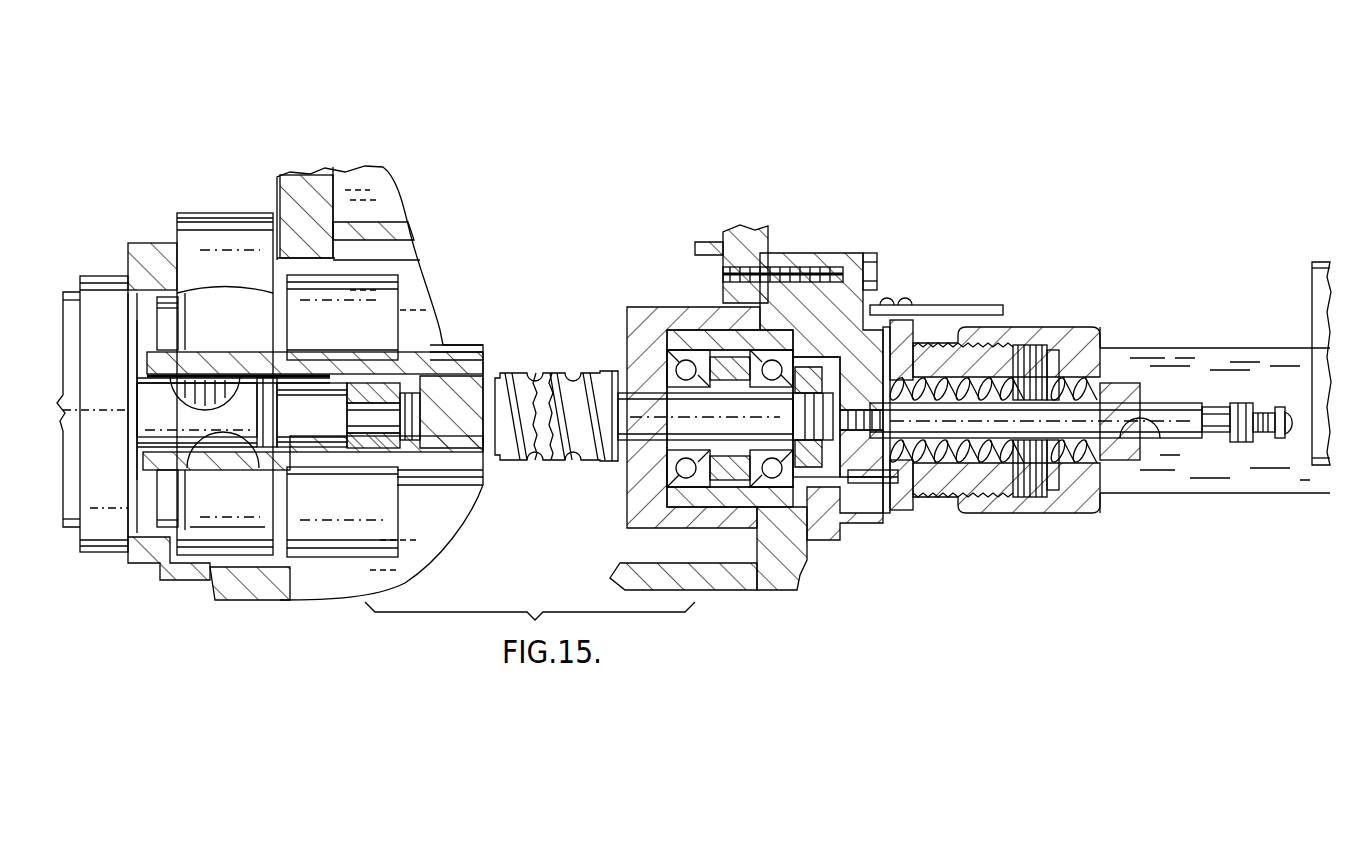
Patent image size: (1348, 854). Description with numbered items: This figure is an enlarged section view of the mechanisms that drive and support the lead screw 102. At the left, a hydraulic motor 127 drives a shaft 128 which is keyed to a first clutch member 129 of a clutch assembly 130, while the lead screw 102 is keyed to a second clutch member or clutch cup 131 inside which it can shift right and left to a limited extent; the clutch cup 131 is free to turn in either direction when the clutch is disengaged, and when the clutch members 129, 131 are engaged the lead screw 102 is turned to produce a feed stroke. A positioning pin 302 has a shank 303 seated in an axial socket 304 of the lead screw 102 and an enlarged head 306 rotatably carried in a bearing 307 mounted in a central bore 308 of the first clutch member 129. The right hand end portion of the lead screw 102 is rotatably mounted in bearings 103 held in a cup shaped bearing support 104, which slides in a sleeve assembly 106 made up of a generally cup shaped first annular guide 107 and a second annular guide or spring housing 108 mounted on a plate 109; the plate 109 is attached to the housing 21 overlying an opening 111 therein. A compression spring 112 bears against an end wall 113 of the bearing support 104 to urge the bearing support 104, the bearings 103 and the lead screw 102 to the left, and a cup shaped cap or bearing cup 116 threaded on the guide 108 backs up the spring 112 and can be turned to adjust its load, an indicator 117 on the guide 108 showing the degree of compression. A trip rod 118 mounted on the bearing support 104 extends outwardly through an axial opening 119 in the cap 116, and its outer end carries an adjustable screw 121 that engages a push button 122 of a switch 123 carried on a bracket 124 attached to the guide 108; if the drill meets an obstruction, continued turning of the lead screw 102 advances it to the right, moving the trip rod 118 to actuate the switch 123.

The housing 21 is at (320, 170).
The lead screw 102 is at (525, 460).
The bearings 103 is at (693, 330).
The bearing support 104 is at (830, 497).
The sleeve assembly 106 is at (823, 560).
The first annular guide 107 is at (640, 510).
The spring housing 108 is at (927, 482).
The plate 109 is at (780, 567).
The opening 111 is at (720, 303).
The compression spring 112 is at (948, 480).
The end wall 113 is at (893, 490).
The bearing cup 116 is at (1080, 507).
The indicator 117 is at (963, 305).
The trip rod 118 is at (1172, 417).
The axial opening 119 is at (1162, 432).
The adjustable screw 121 is at (1247, 444).
The push button 122 is at (1298, 440).
The switch 123 is at (1318, 300).
The bracket 124 is at (1198, 352).
The hydraulic motor 127 is at (70, 292).
The shaft 128 is at (153, 403).
The first clutch member 129 is at (155, 462).
The clutch assembly 130 is at (208, 210).
The clutch cup 131 is at (478, 488).
The positioning pin 302 is at (342, 452).
The shank 303 is at (385, 400).
The axial socket 304 is at (407, 405).
The enlarged head 306 is at (298, 410).
The bearing 307 is at (337, 405).
The central bore 308 is at (207, 433).